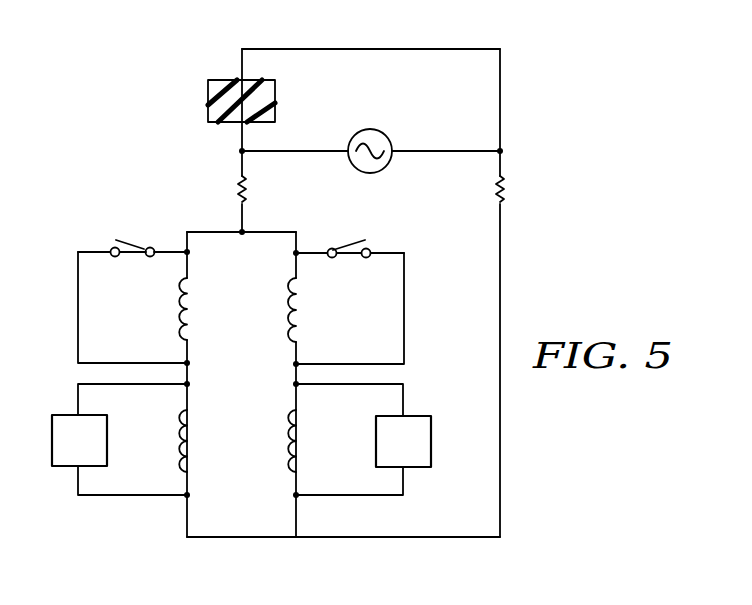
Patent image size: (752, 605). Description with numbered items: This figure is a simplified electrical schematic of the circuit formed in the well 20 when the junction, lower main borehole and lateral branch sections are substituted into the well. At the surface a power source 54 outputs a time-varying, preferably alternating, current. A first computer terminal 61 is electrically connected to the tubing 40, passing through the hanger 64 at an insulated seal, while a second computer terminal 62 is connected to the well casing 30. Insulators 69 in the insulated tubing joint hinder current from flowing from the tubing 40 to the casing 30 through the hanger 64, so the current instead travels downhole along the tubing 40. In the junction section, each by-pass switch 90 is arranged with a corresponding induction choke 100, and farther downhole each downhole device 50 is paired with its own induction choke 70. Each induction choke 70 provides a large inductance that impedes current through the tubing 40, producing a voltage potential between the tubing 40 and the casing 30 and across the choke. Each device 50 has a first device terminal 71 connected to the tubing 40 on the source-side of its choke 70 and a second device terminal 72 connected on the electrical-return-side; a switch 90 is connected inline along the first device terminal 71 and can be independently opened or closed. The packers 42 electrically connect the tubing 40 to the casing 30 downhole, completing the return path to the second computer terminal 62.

The well 20 is at (120, 151).
The well casing 30 is at (505, 191).
The tubing 40 is at (235, 190).
The packer 42 is at (185, 518).
The downhole device 50 is at (241, 441).
The power source 54 is at (370, 129).
The first computer terminal 61 is at (320, 150).
The second computer terminal 62 is at (452, 149).
The hanger 64 is at (368, 49).
The insulator 69 is at (208, 95).
The induction choke 70 is at (188, 431).
The first device terminal 71 is at (78, 400).
The second device terminal 72 is at (78, 481).
The by-pass switch 90 is at (131, 238).
The induction choke 100 is at (167, 308).